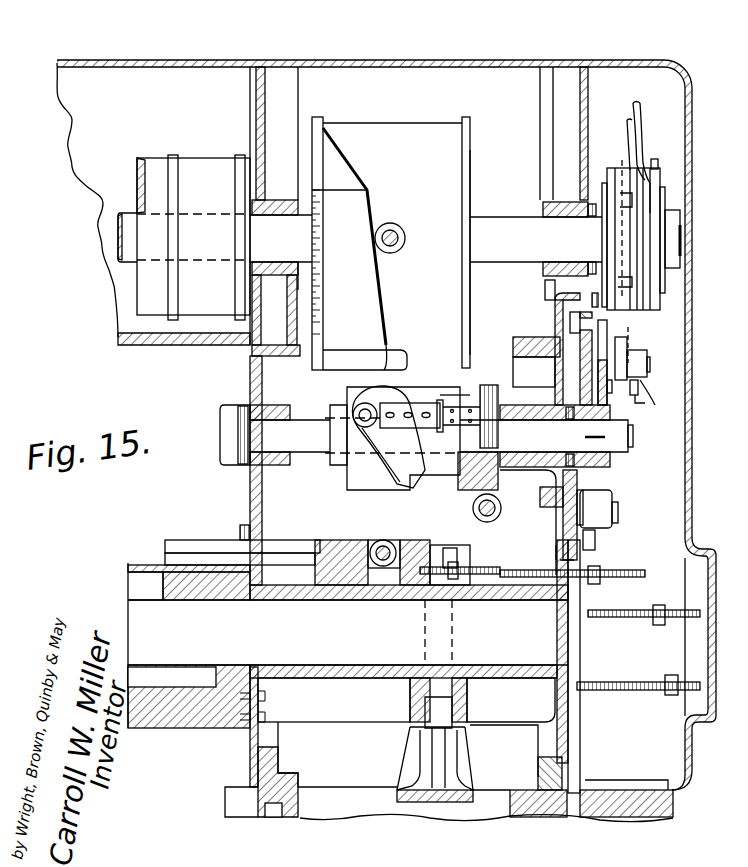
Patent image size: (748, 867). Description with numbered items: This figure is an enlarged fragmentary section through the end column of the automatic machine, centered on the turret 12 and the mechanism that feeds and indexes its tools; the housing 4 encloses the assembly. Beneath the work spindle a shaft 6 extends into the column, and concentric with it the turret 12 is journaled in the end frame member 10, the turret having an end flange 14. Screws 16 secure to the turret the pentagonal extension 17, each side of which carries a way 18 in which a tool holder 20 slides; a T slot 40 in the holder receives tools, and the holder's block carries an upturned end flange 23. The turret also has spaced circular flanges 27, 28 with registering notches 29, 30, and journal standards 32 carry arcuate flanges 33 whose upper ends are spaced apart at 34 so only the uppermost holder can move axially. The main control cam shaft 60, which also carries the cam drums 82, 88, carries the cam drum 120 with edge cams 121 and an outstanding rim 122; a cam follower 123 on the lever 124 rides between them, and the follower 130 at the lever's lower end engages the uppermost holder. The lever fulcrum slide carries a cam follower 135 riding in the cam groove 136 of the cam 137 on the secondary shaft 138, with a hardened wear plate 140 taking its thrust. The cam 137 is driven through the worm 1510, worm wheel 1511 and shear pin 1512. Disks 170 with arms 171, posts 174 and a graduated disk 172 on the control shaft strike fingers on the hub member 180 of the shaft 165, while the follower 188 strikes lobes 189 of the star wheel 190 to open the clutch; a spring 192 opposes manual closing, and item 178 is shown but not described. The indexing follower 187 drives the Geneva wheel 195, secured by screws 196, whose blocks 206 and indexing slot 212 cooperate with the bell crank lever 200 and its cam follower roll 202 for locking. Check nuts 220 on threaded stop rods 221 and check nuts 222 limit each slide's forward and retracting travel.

The housing 4 is at (190, 345).
The shaft 6 is at (342, 650).
The end frame member 10 is at (250, 488).
The turret 12 is at (530, 682).
The end flange 14 is at (570, 728).
The screws 16 is at (266, 714).
The extension 17 is at (207, 728).
The way 18 is at (160, 568).
The tool holder 20 is at (320, 542).
The upturned end flange 23 is at (443, 548).
The circular flange 27 is at (410, 705).
The circular flange 28 is at (467, 705).
The notch 29 is at (405, 585).
The notch 30 is at (455, 585).
The journal standard 32 is at (462, 758).
The arcuate flange 33 is at (437, 728).
The space 34 is at (438, 632).
The T slot 40 is at (208, 542).
The main control cam shaft 60 is at (127, 220).
The cam drum 82 is at (215, 168).
The cam drum 88 is at (158, 165).
The cam drum 120 is at (412, 130).
The edge cam 121 is at (357, 190).
The outstanding rim 122 is at (468, 182).
The cam follower 123 is at (403, 233).
The lever 124 is at (400, 550).
The follower 130 is at (381, 540).
The cam follower 135 is at (356, 406).
The cam groove 136 is at (398, 466).
The cam 137 is at (428, 392).
The secondary shaft 138 is at (316, 440).
The wear plate 140 is at (415, 425).
The shaft 165 is at (650, 358).
The disk 170 is at (650, 272).
The arm 171 is at (642, 104).
The graduated disk 172 is at (670, 190).
The post 174 is at (656, 158).
The pins 178 is at (626, 342).
The hub member 180 is at (648, 352).
The indexing follower 187 is at (570, 322).
The follower 188 is at (632, 432).
The lobe 189 is at (600, 390).
The star wheel 190 is at (585, 370).
The spring 192 is at (548, 296).
The Geneva wheel 195 is at (598, 560).
The screws 196 is at (558, 528).
The bell crank lever 200 is at (604, 510).
The cam follower roll 202 is at (600, 538).
The block 206 is at (593, 485).
The indexing slot 212 is at (582, 768).
The check nut 220 is at (672, 680).
The threaded stop rod 221 is at (676, 612).
The check nut 222 is at (492, 562).
The worm 1510 is at (472, 508).
The worm wheel 1511 is at (560, 490).
The shear pin 1512 is at (483, 390).